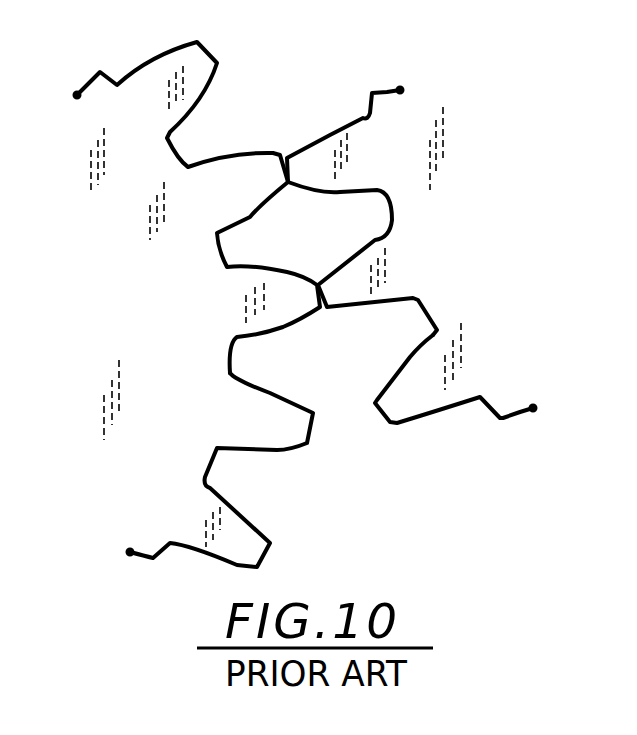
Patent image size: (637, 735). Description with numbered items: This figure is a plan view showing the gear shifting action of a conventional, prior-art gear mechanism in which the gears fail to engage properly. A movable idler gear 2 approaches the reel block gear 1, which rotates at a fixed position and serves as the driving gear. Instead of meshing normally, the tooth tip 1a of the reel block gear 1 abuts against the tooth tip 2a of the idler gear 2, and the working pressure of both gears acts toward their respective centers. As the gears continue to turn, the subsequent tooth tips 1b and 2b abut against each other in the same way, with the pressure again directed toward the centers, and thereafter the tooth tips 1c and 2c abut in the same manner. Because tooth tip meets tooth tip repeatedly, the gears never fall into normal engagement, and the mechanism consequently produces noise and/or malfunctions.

The reel block gear 1 is at (177, 292).
The tooth tip of reel block gear 1a is at (270, 167).
The subsequent tooth tip of reel block gear 1b is at (300, 295).
The further tooth tip of reel block gear 1c is at (287, 427).
The idler gear 2 is at (420, 227).
The tooth tip of idler gear 2a is at (317, 165).
The subsequent tooth tip of idler gear 2b is at (333, 290).
The further tooth tip of idler gear 2c is at (393, 410).